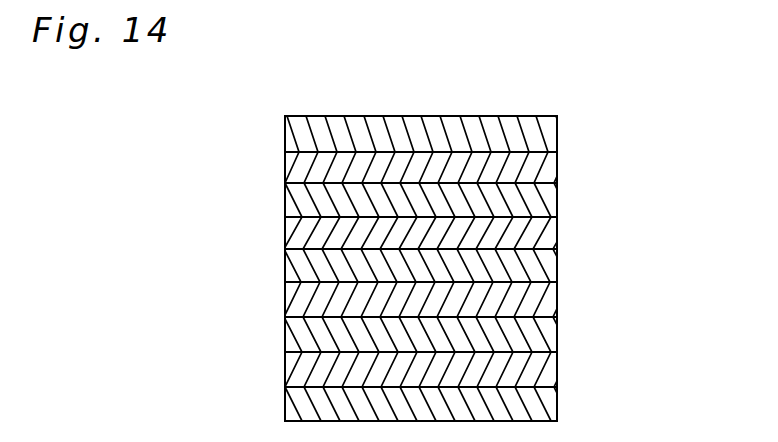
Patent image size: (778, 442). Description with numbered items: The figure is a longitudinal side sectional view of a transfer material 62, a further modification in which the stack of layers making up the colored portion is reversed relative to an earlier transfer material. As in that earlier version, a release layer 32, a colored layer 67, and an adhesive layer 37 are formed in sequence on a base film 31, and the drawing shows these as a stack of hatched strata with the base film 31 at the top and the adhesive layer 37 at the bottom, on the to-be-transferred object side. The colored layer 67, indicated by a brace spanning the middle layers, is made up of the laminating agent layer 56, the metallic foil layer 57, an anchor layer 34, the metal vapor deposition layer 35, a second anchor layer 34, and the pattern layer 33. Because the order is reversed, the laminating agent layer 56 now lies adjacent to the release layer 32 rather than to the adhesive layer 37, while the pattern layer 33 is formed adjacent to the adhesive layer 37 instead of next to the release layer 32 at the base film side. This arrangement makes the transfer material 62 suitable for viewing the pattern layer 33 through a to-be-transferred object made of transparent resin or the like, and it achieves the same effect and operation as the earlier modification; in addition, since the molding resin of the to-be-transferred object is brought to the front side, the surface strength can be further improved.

The transfer material 62 is at (313, 93).
The base film 31 is at (284, 135).
The release layer 32 is at (284, 170).
The colored layer 67 is at (122, 378).
The laminating agent layer 56 is at (284, 205).
The metallic foil layer 57 is at (284, 236).
The anchor layer 34 is at (284, 268).
The metal vapor deposition layer 35 is at (284, 302).
The pattern layer 33 is at (284, 368).
The adhesive layer 37 is at (284, 408).